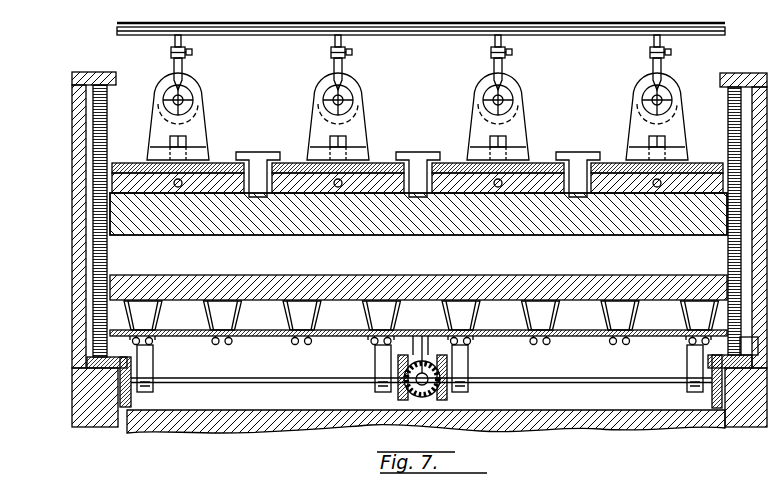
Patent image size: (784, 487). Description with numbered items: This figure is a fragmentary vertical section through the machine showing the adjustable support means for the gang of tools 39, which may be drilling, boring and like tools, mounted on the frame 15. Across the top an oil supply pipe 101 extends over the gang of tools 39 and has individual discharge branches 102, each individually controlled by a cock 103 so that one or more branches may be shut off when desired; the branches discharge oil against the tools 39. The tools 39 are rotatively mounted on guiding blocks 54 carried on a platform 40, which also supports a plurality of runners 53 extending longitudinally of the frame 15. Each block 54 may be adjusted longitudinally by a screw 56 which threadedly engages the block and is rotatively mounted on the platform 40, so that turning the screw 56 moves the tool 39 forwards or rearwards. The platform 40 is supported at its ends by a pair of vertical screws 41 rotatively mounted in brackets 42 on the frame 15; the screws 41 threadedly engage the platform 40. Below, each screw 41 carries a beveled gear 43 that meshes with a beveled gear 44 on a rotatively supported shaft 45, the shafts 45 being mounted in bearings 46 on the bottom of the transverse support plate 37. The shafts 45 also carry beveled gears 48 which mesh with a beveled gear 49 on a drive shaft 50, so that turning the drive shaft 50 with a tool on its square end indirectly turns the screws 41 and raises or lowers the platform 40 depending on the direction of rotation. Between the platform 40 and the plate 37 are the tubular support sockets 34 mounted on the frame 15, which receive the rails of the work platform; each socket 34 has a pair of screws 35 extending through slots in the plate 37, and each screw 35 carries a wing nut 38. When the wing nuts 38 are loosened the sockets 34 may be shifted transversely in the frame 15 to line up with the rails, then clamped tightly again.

The frame 15 is at (98, 431).
The tubular support sockets 34 is at (275, 303).
The screws 35 is at (225, 345).
The transverse support plate 37 is at (335, 337).
The wing nuts 38 is at (152, 345).
The tools 39 is at (186, 100).
The platform 40 is at (386, 226).
The vertical screws 41 is at (108, 253).
The brackets 42 is at (77, 74).
The beveled gears 43 is at (88, 360).
The beveled gears 44 is at (130, 425).
The shafts 45 is at (560, 382).
The bearings 46 is at (153, 390).
The beveled gears 48 is at (400, 400).
The beveled gear 49 is at (424, 385).
The drive shaft 50 is at (410, 395).
The runners 53 is at (272, 160).
The guiding blocks 54 is at (200, 176).
The screw 56 is at (174, 182).
The oil supply pipe 101 is at (445, 35).
The discharge branches 102 is at (176, 60).
The cocks 103 is at (194, 52).